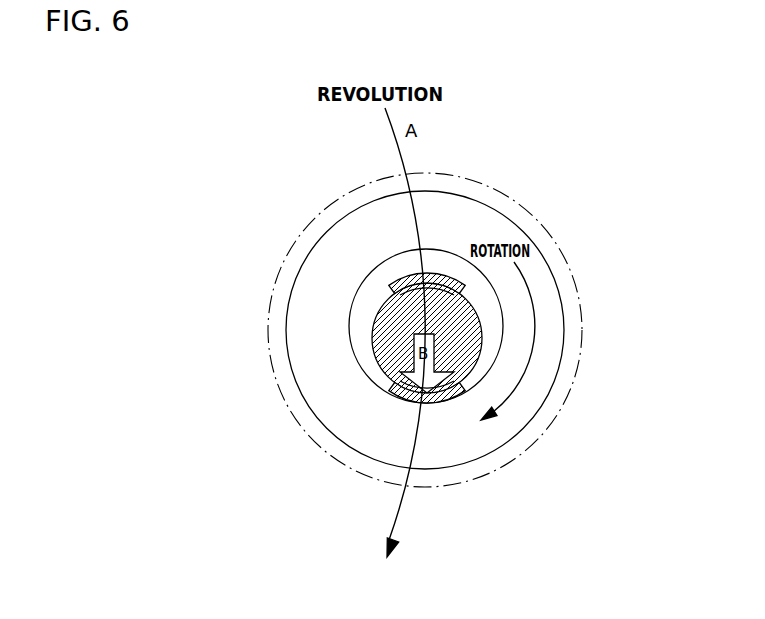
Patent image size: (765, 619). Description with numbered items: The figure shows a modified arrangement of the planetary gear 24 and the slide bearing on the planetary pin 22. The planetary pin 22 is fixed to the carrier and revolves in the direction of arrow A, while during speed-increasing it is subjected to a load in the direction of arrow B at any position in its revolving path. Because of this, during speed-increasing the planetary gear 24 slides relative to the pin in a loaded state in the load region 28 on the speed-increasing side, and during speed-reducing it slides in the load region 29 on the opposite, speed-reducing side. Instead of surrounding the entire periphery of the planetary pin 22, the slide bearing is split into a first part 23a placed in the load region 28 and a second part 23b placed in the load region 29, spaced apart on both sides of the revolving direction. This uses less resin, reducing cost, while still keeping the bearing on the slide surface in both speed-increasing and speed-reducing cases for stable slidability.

The planetary pin 22 is at (378, 337).
The first part 23a is at (426, 394).
The second part 23b is at (437, 283).
The planetary gear 24 is at (572, 294).
The load region on the speed-increasing side 28 is at (392, 382).
The load region on the speed-reducing side 29 is at (392, 290).